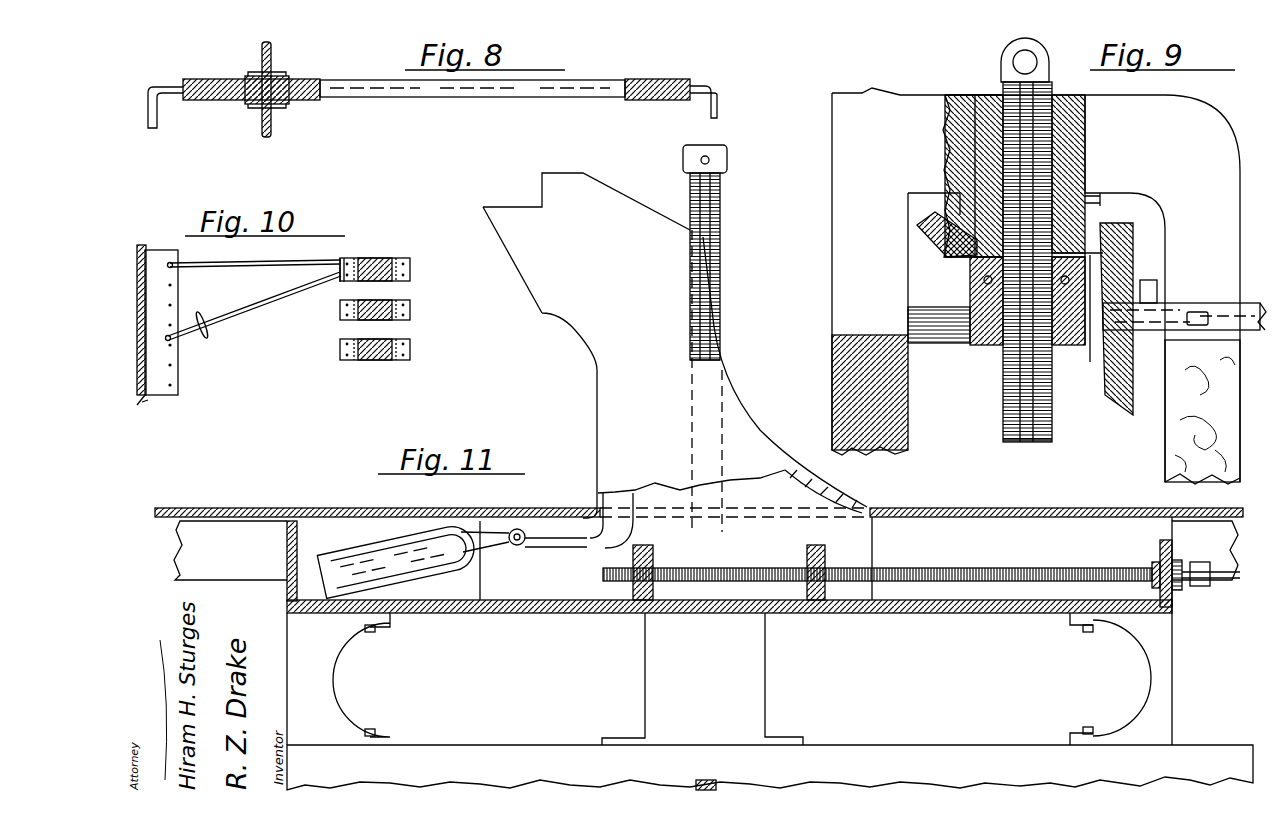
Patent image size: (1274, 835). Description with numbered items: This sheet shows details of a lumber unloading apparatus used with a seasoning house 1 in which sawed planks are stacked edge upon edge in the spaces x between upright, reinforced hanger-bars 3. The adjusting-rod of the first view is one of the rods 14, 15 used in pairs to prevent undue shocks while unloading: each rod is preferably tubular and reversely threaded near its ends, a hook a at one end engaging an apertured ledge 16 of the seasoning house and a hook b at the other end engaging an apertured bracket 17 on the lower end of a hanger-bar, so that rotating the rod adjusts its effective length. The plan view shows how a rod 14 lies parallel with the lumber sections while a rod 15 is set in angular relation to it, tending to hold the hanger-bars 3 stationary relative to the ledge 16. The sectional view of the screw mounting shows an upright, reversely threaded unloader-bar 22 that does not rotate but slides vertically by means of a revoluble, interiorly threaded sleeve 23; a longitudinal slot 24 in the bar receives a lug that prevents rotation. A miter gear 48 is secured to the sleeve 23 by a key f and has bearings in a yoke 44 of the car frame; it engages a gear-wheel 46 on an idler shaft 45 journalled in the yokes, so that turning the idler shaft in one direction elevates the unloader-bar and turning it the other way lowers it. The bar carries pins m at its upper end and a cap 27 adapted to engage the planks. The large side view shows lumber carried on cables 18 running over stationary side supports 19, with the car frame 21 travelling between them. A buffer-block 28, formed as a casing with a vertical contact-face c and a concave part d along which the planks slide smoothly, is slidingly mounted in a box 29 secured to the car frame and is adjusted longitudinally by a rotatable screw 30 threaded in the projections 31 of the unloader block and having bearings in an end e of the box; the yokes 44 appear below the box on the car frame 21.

In FIG. 10, the seasoning house 1 is at (144, 409).
In FIG. 10, the hanger-bar 3 is at (372, 262).
In FIG. 10, the adjusting-rod 14 is at (235, 268).
In FIG. 8, the adjusting-rod 15 is at (505, 100).
In FIG. 10, the adjusting-rod 15 is at (272, 312).
In FIG. 10, the apertured ledge 16 is at (178, 366).
In FIG. 10, the apertured bracket 17 is at (342, 262).
In FIG. 11, the cable 18 is at (243, 508).
In FIG. 11, the stationary side support 19 is at (187, 534).
In FIG. 11, the car frame 21 is at (1205, 745).
In FIG. 9, the unloader-bar 22 is at (1005, 418).
In FIG. 11, the unloader-bar 22 is at (735, 210).
In FIG. 9, the interiorly threaded sleeve 23 is at (1057, 147).
In FIG. 9, the slot 24 is at (1005, 378).
In FIG. 11, the slot 24 is at (720, 232).
In FIG. 11, the cap 27 is at (728, 152).
In FIG. 11, the buffer-block 28 is at (612, 346).
In FIG. 11, the box 29 is at (287, 548).
In FIG. 11, the screw 30 is at (935, 570).
In FIG. 11, the projection 31 is at (653, 550).
In FIG. 9, the yoke 44 is at (1198, 142).
In FIG. 11, the yoke 44 is at (752, 668).
In FIG. 9, the idler shaft 45 is at (1252, 340).
In FIG. 9, the gear-wheel 46 is at (1117, 400).
In FIG. 9, the miter gear 48 is at (946, 231).
In FIG. 8, the hook a is at (158, 118).
In FIG. 8, the hook b is at (720, 105).
In FIG. 11, the vertical contact-face c is at (703, 285).
In FIG. 11, the concave part d is at (718, 385).
In FIG. 11, the end of box e is at (1160, 549).
In FIG. 9, the key f is at (1102, 198).
In FIG. 11, the pin m is at (683, 160).
In FIG. 10, the space x is at (410, 287).